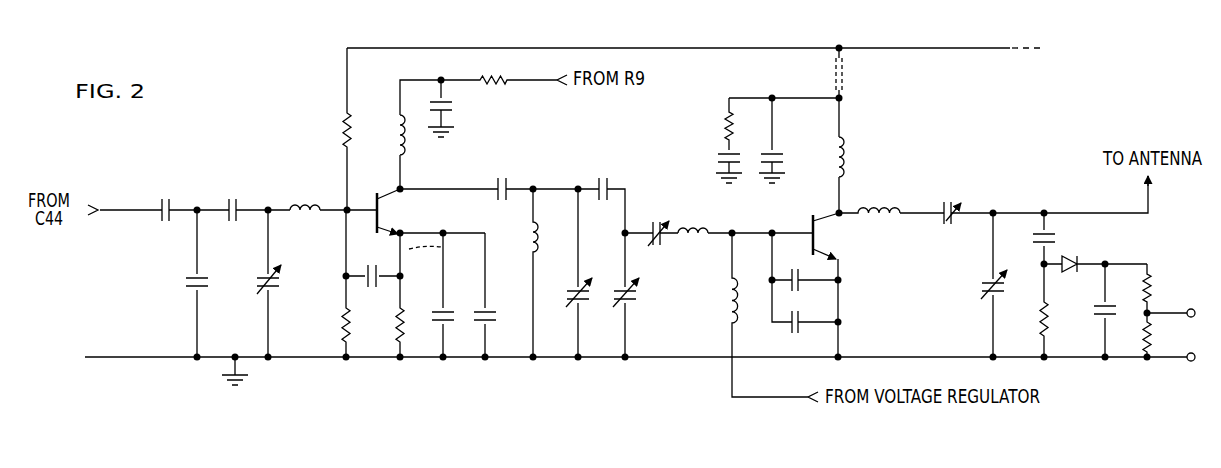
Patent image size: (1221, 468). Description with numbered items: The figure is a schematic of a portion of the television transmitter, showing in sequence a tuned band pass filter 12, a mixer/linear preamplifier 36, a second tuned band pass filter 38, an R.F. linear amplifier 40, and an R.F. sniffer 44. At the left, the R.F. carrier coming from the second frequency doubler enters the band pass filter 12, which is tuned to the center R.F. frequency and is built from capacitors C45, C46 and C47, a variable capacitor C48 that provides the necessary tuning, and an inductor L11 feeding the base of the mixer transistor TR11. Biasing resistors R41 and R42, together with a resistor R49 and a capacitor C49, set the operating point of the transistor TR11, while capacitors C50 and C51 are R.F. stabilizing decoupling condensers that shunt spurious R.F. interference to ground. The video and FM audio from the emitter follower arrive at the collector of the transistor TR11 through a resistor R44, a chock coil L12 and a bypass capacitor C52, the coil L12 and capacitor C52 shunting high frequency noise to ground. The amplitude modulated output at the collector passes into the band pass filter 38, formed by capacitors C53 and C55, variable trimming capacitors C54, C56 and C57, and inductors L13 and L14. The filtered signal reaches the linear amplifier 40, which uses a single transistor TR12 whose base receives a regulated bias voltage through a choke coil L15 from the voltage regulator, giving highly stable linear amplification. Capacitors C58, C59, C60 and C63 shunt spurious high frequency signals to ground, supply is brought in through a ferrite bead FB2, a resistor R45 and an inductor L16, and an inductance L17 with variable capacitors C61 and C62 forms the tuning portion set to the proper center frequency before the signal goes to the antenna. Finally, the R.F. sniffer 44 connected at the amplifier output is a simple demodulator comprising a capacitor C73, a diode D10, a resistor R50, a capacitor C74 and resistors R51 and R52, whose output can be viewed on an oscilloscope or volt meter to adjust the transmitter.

The band pass filter 12 is at (213, 279).
The mixer/linear preamplifier 36 is at (441, 44).
The tuned band pass filter 38 is at (597, 291).
The tuned linear amplifier 40 is at (878, 222).
The R.F. sniffer 44 is at (1097, 287).
The capacitor C45 is at (171, 197).
The capacitor C46 is at (179, 283).
The capacitor C47 is at (232, 197).
The variable capacitor C48 is at (217, 324).
The inductor L11 is at (322, 190).
The biasing resistor R42 is at (330, 129).
The chock coil L12 is at (404, 134).
The resistor R44 is at (504, 67).
The bypass capacitor C52 is at (456, 108).
The mixer transistor TR11 is at (397, 211).
The capacitor C53 is at (466, 175).
The capacitor C55 is at (601, 192).
The capacitor C49 is at (373, 262).
The biasing resistor R41 is at (331, 283).
The resistor R49 is at (385, 295).
The R.F. stabilizing decoupling condenser C50 is at (452, 295).
The R.F. stabilizing decoupling condenser C51 is at (495, 295).
The inductor L13 is at (549, 273).
The variable capacitor C54 is at (569, 273).
The variable capacitor C56 is at (604, 361).
The variable capacitor C57 is at (651, 219).
The inductor L14 is at (745, 216).
The choke coil L15 is at (756, 317).
The capacitor C58 is at (805, 288).
The capacitor C59 is at (805, 315).
The transistor TR12 is at (836, 285).
The inductor L16 is at (859, 155).
The inductance L17 is at (891, 198).
The ferrite bead FB2 is at (857, 73).
The resistor R45 is at (710, 124).
The capacitor C63 is at (712, 163).
The capacitor C60 is at (784, 140).
The variable capacitor C61 is at (964, 199).
The variable capacitor C62 is at (982, 285).
The capacitor C73 is at (1027, 238).
The diode D10 is at (1095, 251).
The resistor R50 is at (1030, 310).
The capacitor C74 is at (1094, 310).
The resistor R51 is at (1169, 290).
The resistor R52 is at (1169, 337).